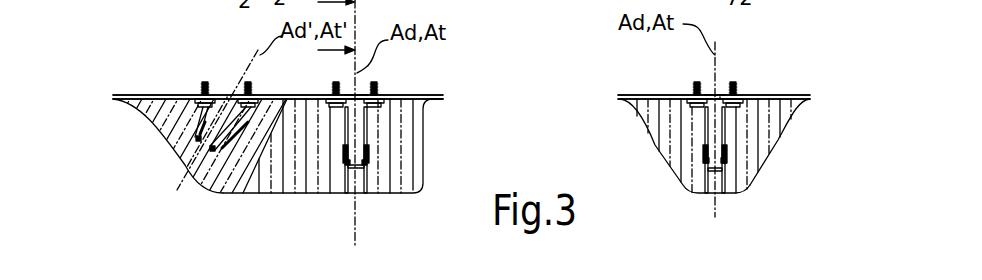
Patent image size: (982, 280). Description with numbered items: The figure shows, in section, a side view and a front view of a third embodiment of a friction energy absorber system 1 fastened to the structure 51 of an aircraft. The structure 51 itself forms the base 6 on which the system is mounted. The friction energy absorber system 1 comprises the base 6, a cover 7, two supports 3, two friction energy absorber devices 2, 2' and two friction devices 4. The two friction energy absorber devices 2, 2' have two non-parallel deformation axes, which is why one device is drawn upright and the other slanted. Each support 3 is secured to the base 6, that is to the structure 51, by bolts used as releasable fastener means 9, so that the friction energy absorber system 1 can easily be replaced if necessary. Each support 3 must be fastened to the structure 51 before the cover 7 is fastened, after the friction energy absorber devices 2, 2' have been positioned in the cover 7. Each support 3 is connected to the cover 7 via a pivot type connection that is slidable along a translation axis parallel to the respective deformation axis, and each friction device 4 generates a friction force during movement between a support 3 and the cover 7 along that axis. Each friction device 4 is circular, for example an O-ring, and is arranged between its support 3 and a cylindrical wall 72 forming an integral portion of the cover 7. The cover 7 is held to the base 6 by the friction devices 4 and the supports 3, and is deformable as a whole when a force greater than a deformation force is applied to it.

The friction energy absorber system 1 is at (80, 188).
The structure 51 is at (155, 95).
The base 6 is at (461, 97).
The friction energy absorber device 2 is at (507, 177).
The friction energy absorber device 2' is at (175, 183).
The cover 7 is at (218, 192).
The cylindrical wall 72 is at (183, 165).
The friction device 4 is at (212, 148).
The support 3 is at (227, 97).
The releasable fastener means 9 is at (203, 83).